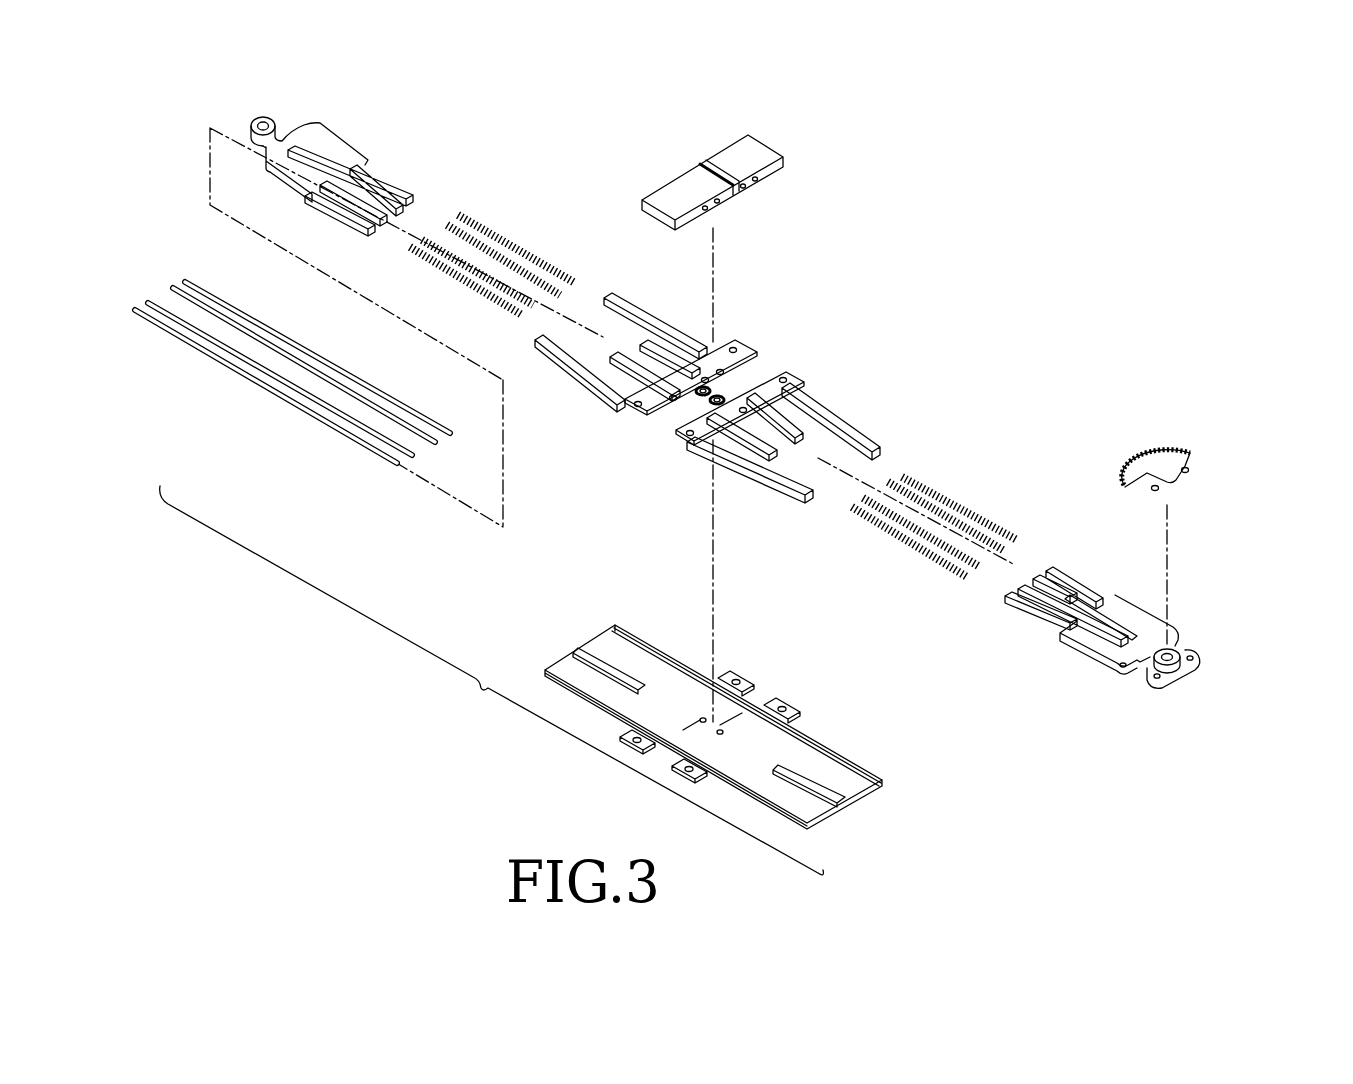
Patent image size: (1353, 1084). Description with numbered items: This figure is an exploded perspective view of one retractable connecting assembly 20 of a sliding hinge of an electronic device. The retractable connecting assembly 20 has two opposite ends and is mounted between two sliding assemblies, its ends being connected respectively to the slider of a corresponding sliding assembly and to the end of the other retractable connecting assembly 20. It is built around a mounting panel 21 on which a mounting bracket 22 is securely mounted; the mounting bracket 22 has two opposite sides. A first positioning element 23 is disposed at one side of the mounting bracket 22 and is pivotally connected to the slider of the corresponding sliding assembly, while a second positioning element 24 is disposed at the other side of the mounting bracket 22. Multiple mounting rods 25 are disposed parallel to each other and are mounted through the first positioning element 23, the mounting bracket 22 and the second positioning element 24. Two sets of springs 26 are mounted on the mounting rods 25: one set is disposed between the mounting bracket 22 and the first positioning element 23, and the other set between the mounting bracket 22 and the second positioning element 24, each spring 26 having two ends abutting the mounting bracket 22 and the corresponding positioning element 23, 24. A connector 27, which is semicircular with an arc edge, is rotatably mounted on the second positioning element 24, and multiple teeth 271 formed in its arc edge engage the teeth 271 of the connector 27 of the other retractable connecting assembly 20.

The retractable connecting assembly 20 is at (492, 680).
The mounting panel 21 is at (818, 760).
The mounting bracket 22 is at (790, 340).
The first positioning element 23 is at (347, 153).
The second positioning element 24 is at (1088, 637).
The mounting rods 25 is at (268, 393).
The spring 26 is at (507, 243).
The connector 27 is at (1205, 478).
The teeth 271 is at (1197, 498).